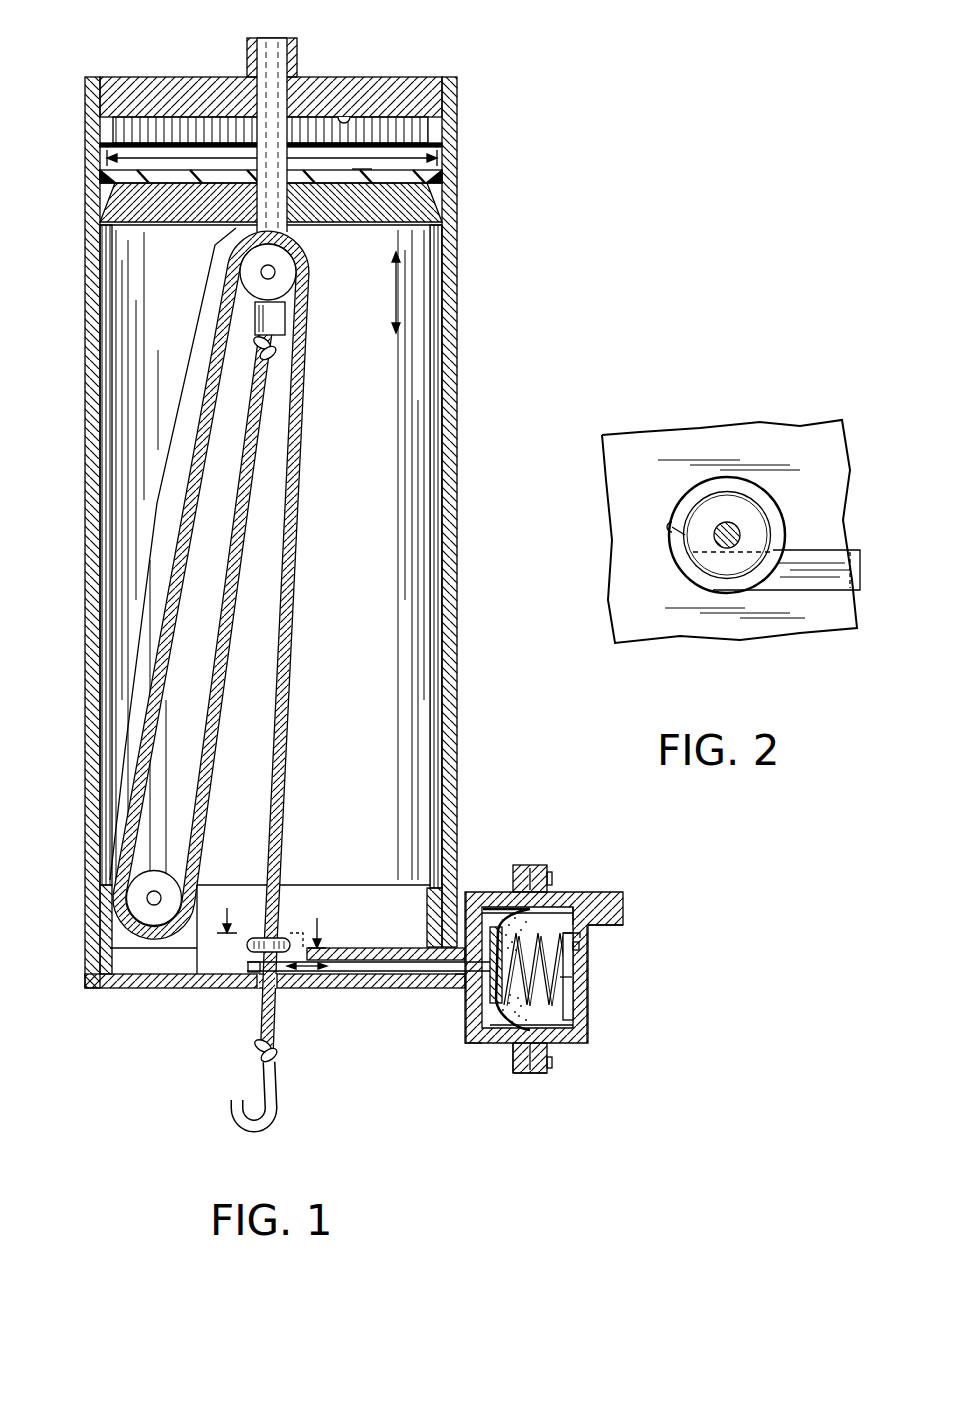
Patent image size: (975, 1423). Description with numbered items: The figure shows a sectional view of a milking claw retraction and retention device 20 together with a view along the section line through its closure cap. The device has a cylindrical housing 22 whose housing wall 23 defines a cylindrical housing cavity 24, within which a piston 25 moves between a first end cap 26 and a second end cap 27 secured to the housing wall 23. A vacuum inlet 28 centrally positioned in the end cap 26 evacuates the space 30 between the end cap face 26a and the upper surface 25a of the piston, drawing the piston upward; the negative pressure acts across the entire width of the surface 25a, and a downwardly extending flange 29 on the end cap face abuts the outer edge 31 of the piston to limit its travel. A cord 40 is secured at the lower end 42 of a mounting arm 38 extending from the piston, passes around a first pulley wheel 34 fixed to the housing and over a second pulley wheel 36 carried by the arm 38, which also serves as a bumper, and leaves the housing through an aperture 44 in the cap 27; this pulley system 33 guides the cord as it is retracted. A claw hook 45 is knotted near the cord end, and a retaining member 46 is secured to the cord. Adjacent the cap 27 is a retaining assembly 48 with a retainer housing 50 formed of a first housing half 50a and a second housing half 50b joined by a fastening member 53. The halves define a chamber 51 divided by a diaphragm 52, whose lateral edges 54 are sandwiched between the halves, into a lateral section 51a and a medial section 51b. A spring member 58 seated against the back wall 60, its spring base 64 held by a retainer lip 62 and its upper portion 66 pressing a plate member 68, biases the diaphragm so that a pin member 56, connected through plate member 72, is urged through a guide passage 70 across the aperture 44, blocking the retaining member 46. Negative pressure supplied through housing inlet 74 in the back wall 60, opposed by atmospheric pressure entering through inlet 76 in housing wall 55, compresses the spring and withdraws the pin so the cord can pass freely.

In FIG. 1, the milking claw retraction and retention device 20 is at (291, 571).
In FIG. 1, the cylindrical housing 22 is at (462, 365).
In FIG. 1, the housing wall 23 is at (85, 515).
In FIG. 1, the cylindrical housing cavity 24 is at (432, 297).
In FIG. 1, the piston 25 is at (443, 183).
In FIG. 1, the upper surface of the piston 25a is at (362, 170).
In FIG. 1, the first end cap 26 is at (400, 82).
In FIG. 1, the end cap face 26a is at (342, 113).
In FIG. 1, the second end cap 27 is at (87, 965).
In FIG. 2, the second end cap 27 is at (660, 445).
In FIG. 1, the vacuum inlet 28 is at (312, 24).
In FIG. 1, the downwardly extending flange 29 is at (110, 132).
In FIG. 1, the space 30 is at (400, 150).
In FIG. 1, the outer edge of the piston 31 is at (97, 158).
In FIG. 1, the pulley system 33 is at (162, 505).
In FIG. 1, the first pulley wheel 34 is at (140, 882).
In FIG. 1, the second pulley wheel 36 is at (285, 285).
In FIG. 1, the mounting arm 38 is at (280, 318).
In FIG. 1, the cord 40 is at (300, 474).
In FIG. 2, the cord 40 is at (729, 527).
In FIG. 1, the lower end of arm 42 is at (258, 327).
In FIG. 1, the aperture 44 is at (283, 990).
In FIG. 2, the aperture 44 is at (672, 530).
In FIG. 1, the claw hook 45 is at (287, 1110).
In FIG. 1, the retaining member 46 is at (250, 952).
In FIG. 2, the retaining member 46 is at (758, 520).
In FIG. 1, the retaining assembly 48 is at (561, 966).
In FIG. 1, the retainer housing 50 is at (592, 1038).
In FIG. 1, the first housing half 50a is at (537, 1074).
In FIG. 1, the second housing half 50b is at (515, 1077).
In FIG. 1, the chamber 51 is at (562, 1018).
In FIG. 1, the lateral chamber section 51a is at (547, 1024).
In FIG. 1, the medial chamber section 51b is at (472, 1040).
In FIG. 1, the diaphragm 52 is at (491, 1012).
In FIG. 1, the fastening member 53 is at (548, 878).
In FIG. 1, the lateral edges of the diaphragm 54 is at (534, 907).
In FIG. 1, the housing wall of medial housing half 55 is at (478, 891).
In FIG. 1, the pin member 56 is at (380, 972).
In FIG. 2, the pin member 56 is at (812, 578).
In FIG. 1, the spring member 58 is at (570, 967).
In FIG. 1, the back wall 60 is at (583, 1003).
In FIG. 1, the retainer lip 62 is at (573, 978).
In FIG. 1, the spring base 64 is at (578, 950).
In FIG. 1, the upper portion of the spring 66 is at (574, 923).
In FIG. 1, the plate member 68 is at (548, 917).
In FIG. 1, the guide passage 70 is at (352, 961).
In FIG. 1, the plate member 72 is at (463, 989).
In FIG. 1, the housing inlet 74 is at (592, 921).
In FIG. 1, the inlet 76 is at (494, 925).